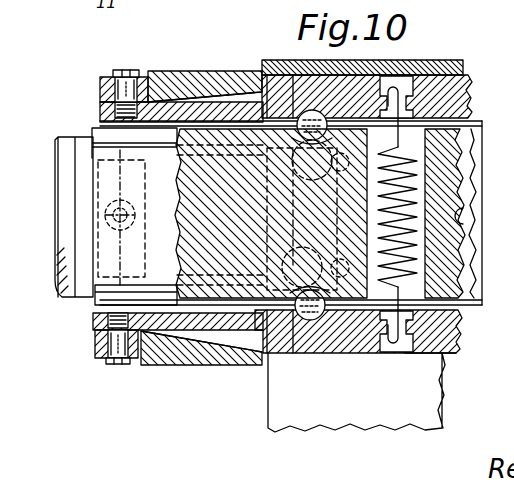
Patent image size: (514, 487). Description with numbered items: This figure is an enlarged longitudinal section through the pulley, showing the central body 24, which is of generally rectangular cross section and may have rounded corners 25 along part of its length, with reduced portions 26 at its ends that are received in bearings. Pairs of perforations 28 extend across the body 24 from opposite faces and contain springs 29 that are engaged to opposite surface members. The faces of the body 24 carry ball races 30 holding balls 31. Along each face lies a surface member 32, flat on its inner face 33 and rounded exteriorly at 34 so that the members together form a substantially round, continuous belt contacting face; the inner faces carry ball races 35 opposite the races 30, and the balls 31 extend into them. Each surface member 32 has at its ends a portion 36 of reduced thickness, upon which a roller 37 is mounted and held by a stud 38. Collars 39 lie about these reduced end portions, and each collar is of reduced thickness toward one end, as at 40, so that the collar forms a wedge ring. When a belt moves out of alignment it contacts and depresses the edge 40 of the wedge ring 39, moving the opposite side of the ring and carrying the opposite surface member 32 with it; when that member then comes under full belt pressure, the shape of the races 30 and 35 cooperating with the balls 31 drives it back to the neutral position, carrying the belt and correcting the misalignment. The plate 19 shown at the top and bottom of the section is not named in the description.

The frame plate 19 is at (452, 60).
The central body 24 is at (462, 158).
The rounded corners 25 is at (106, 132).
The reduced portions 26 is at (70, 288).
The perforations 28 is at (462, 172).
The springs 29 is at (440, 286).
The ball races 30 is at (333, 262).
The balls 31 is at (312, 110).
The surface member 32 is at (470, 86).
The inner flat face 33 is at (472, 109).
The rounded exterior 34 is at (425, 364).
The ball races 35 is at (298, 78).
The portion of reduced thickness 36 is at (160, 112).
The roller 37 is at (100, 92).
The stud 38 is at (120, 78).
The collar 39 is at (168, 98).
The reduced-thickness edge 40 is at (256, 85).